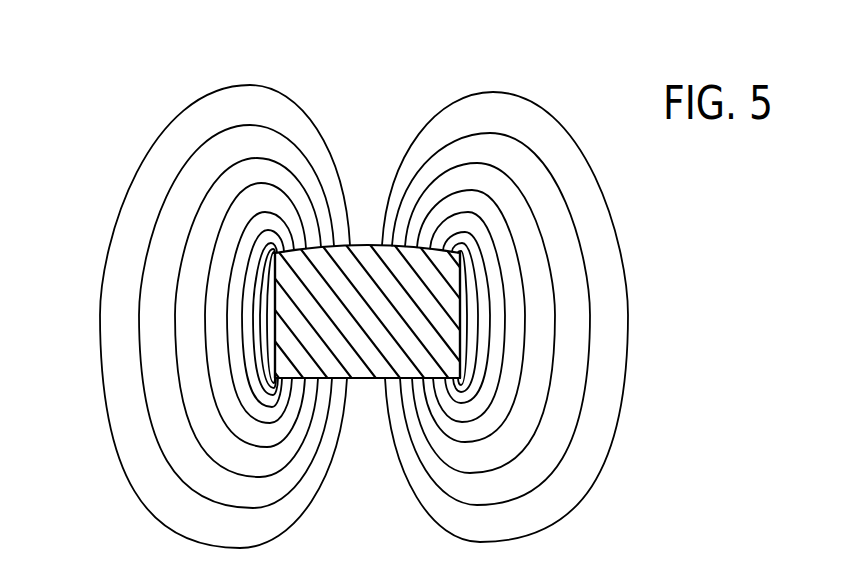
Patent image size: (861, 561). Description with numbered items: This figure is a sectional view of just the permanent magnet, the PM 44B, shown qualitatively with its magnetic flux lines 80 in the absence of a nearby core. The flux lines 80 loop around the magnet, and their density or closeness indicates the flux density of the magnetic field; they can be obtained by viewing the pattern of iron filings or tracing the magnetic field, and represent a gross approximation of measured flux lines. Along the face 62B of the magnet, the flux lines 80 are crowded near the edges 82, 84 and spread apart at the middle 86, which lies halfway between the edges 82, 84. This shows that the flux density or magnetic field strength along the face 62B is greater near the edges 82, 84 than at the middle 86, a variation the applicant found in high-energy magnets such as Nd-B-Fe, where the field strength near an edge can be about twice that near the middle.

The magnetic flux lines 80 is at (621, 233).
The edge 82 is at (273, 275).
The edge 84 is at (460, 305).
The middle 86 is at (383, 247).
The face 62B is at (362, 245).
The PM 44B is at (372, 380).